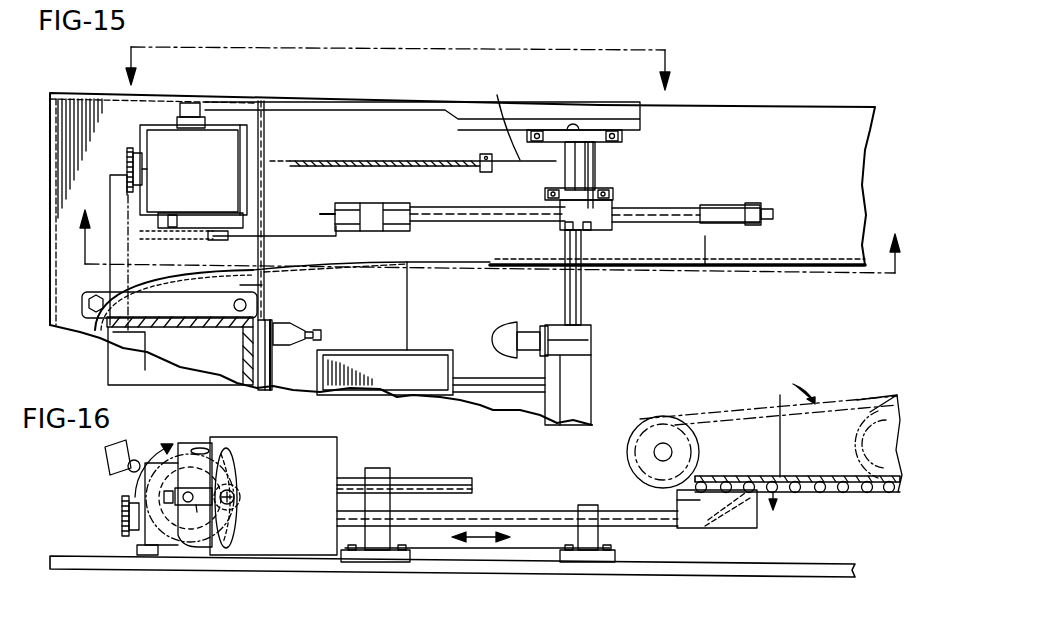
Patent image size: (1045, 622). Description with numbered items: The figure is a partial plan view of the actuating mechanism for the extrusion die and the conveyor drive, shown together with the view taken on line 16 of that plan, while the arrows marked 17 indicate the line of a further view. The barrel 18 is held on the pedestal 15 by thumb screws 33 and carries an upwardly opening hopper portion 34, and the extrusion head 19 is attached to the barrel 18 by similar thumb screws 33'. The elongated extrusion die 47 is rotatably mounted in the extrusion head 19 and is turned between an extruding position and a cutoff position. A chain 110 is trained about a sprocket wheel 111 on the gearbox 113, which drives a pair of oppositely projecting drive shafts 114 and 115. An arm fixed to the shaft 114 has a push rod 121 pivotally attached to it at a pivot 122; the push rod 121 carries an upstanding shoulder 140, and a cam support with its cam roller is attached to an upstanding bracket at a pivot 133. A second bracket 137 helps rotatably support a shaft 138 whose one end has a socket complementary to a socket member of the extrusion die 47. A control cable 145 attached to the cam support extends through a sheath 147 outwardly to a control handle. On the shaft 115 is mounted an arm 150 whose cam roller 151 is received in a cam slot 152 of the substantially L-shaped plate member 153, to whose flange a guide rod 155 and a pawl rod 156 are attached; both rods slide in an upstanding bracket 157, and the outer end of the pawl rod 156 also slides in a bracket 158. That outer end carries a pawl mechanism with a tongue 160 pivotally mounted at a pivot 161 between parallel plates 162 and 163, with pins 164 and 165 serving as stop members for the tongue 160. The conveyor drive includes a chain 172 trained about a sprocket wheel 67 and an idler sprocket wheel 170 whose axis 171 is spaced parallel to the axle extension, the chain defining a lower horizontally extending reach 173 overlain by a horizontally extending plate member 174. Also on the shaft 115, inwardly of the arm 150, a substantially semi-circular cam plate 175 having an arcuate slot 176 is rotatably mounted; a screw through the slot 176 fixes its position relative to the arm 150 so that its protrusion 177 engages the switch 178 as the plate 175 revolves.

In FIG. 15, the pedestal 15 is at (158, 320).
In FIG. 15, the section line 16 is at (486, 255).
In FIG. 15, the view line 17 is at (396, 60).
In FIG. 15, the barrel 18 is at (483, 395).
In FIG. 15, the extrusion head 19 is at (580, 375).
In FIG. 15, the thumb screws 33 is at (312, 322).
In FIG. 15, the thumb screws 33' is at (520, 322).
In FIG. 15, the hopper portion 34 is at (372, 352).
In FIG. 15, the extrusion die 47 is at (582, 300).
In FIG. 16, the sprocket wheel 67 is at (872, 418).
In FIG. 15, the third chain 110 is at (110, 208).
In FIG. 15, the sprocket wheel 111 is at (128, 152).
In FIG. 16, the sprocket wheel 111 is at (122, 516).
In FIG. 15, the gearbox 113 is at (193, 170).
In FIG. 16, the gearbox 113 is at (150, 530).
In FIG. 15, the drive shaft 114 is at (191, 103).
In FIG. 15, the drive shaft 115 is at (190, 229).
In FIG. 16, the drive shaft 115 is at (186, 503).
In FIG. 15, the push rod 121 is at (342, 102).
In FIG. 16, the pivotal attachment 122 is at (452, 589).
In FIG. 15, the pivot 133 is at (596, 178).
In FIG. 15, the second bracket 137 is at (548, 200).
In FIG. 15, the shaft 138 is at (592, 155).
In FIG. 15, the upstanding shoulder 140 is at (587, 130).
In FIG. 15, the control cable 145 is at (268, 285).
In FIG. 15, the sheath 147 is at (355, 160).
In FIG. 15, the arm 150 is at (240, 211).
In FIG. 16, the arm 150 is at (200, 505).
In FIG. 16, the cam roller 151 is at (235, 500).
In FIG. 16, the cam slot 152 is at (232, 455).
In FIG. 16, the plate member 153 is at (273, 496).
In FIG. 15, the guide rod 155 is at (445, 218).
In FIG. 16, the guide rod 155 is at (472, 486).
In FIG. 15, the pawl rod 156 is at (495, 225).
In FIG. 16, the pawl rod 156 is at (525, 528).
In FIG. 16, the upstanding bracket 157 is at (376, 468).
In FIG. 16, the bracket 158 is at (588, 505).
In FIG. 15, the tongue 160 is at (773, 214).
In FIG. 16, the tongue 160 is at (760, 496).
In FIG. 15, the pivot 161 is at (755, 203).
In FIG. 15, the parallel plate 162 is at (690, 230).
In FIG. 15, the parallel plate 163 is at (705, 265).
In FIG. 16, the parallel plate 163 is at (745, 522).
In FIG. 15, the pin 164 is at (718, 205).
In FIG. 16, the pin 164 is at (705, 500).
In FIG. 16, the pin 165 is at (718, 530).
In FIG. 16, the second sprocket wheel 170 is at (694, 440).
In FIG. 16, the axis 171 is at (672, 452).
In FIG. 16, the chain 172 is at (787, 426).
In FIG. 16, the lower reach 173 is at (822, 493).
In FIG. 16, the plate member 174 is at (806, 476).
In FIG. 16, the cam plate 175 is at (186, 445).
In FIG. 16, the arcuate slot 176 is at (196, 446).
In FIG. 16, the protrusion 177 is at (197, 512).
In FIG. 16, the switch 178 is at (105, 463).